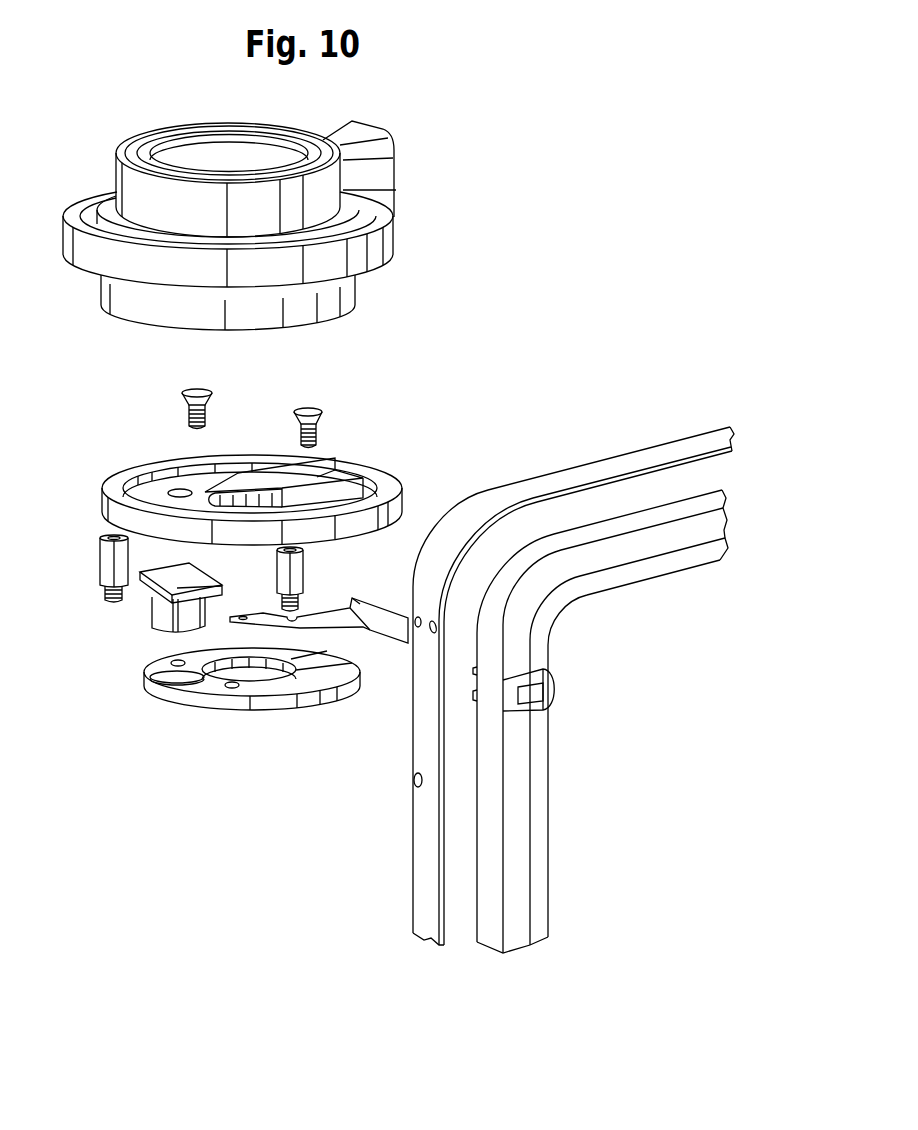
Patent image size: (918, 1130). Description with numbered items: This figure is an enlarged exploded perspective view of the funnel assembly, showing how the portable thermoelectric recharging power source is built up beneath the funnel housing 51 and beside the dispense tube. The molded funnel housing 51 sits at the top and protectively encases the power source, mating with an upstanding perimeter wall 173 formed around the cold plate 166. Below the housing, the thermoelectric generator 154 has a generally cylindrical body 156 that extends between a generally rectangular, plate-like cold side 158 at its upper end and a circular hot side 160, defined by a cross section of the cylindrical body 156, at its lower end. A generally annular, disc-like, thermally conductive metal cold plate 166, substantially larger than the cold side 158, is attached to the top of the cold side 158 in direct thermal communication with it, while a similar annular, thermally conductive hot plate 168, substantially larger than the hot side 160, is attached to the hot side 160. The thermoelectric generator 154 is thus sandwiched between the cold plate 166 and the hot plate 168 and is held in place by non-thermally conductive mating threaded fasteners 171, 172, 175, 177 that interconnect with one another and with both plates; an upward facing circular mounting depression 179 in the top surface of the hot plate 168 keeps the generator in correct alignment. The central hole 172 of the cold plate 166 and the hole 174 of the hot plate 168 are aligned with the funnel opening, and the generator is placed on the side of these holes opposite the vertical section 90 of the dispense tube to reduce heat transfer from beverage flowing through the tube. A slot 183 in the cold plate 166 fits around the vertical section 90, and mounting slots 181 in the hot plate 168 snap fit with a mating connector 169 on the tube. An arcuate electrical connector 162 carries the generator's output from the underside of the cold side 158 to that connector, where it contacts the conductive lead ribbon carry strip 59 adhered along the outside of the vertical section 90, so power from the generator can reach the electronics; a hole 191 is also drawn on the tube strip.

The funnel housing 51 is at (388, 240).
The conductive tape 59 is at (556, 686).
The vertical section 90 is at (532, 721).
The thermoelectric generator 154 is at (150, 610).
The cylindrical body 156 is at (154, 610).
The cold side 158 is at (182, 575).
The hot side 160 is at (168, 630).
The arcuate electrical connector 162 is at (338, 620).
The cold plate 166 is at (250, 466).
The hot plate 168 is at (231, 699).
The mating connector 169 is at (555, 690).
The threaded fastener 171 is at (208, 417).
The threaded fastener / hole 172 is at (233, 497).
The upstanding perimeter wall 173 is at (100, 563).
The hole 174 is at (253, 667).
The threaded fastener 175 is at (320, 440).
The threaded fastener 177 is at (298, 573).
The circular mounting depression 179 is at (148, 673).
The mounting slots 181 is at (323, 662).
The slot 183 is at (377, 485).
The hole 191 is at (433, 620).